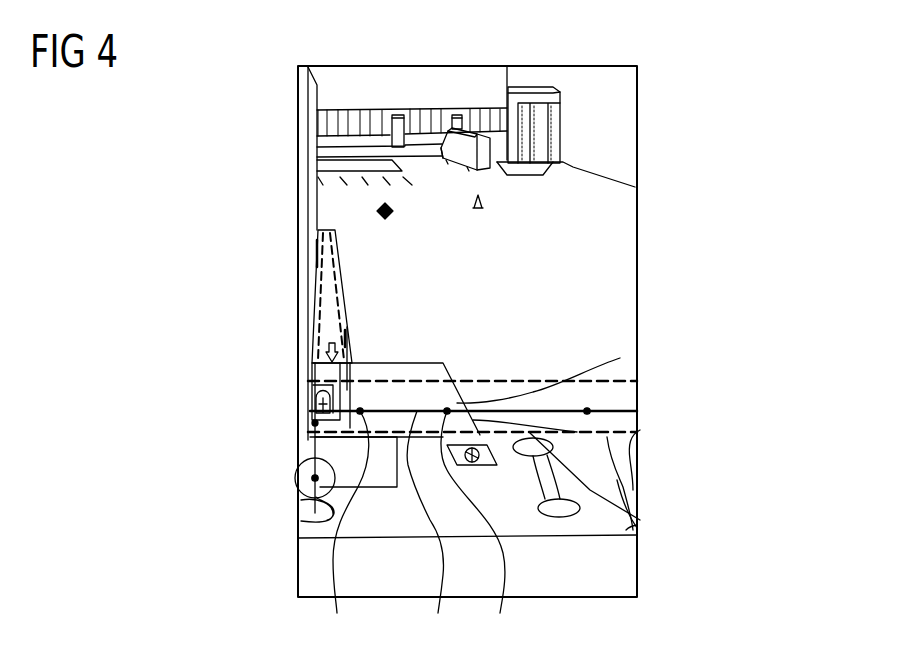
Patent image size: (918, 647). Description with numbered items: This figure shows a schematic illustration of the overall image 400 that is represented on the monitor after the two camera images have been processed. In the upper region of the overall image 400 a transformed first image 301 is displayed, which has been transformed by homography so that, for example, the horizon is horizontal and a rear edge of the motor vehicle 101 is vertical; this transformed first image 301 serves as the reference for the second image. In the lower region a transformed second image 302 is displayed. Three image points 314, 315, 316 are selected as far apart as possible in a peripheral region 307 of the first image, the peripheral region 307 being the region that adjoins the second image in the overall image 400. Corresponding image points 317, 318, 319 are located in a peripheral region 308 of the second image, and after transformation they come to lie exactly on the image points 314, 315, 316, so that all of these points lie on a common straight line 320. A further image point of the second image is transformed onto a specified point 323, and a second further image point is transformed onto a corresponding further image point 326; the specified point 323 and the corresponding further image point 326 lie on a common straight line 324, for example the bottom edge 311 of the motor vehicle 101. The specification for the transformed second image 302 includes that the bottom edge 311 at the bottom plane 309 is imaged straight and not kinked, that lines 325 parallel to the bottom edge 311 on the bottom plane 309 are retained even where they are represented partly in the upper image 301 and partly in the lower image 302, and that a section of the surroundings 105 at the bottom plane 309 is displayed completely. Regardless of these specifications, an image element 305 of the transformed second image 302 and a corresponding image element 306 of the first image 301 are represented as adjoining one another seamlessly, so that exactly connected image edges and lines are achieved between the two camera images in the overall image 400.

The overall image 400 is at (717, 93).
The motor vehicle 101 is at (305, 215).
The transformed first image 301 is at (673, 213).
The transformed second image 302 is at (673, 483).
The image element 305 is at (637, 520).
The corresponding image element 306 is at (620, 358).
The peripheral region 307 is at (271, 395).
The peripheral region 308 is at (520, 424).
The bottom plane 309 is at (623, 258).
The surroundings 105 is at (623, 302).
The bottom edge 311 is at (327, 520).
The image point 314 is at (343, 529).
The image point 315 is at (487, 529).
The image point 316 is at (587, 411).
The corresponding image point 317 is at (386, 629).
The corresponding image point 318 is at (557, 629).
The corresponding image point 319 is at (545, 386).
The straight line 320 is at (436, 529).
The specified point 323 is at (315, 478).
The common straight line 324 is at (263, 523).
The line 325 is at (347, 362).
The corresponding further image point 326 is at (313, 423).